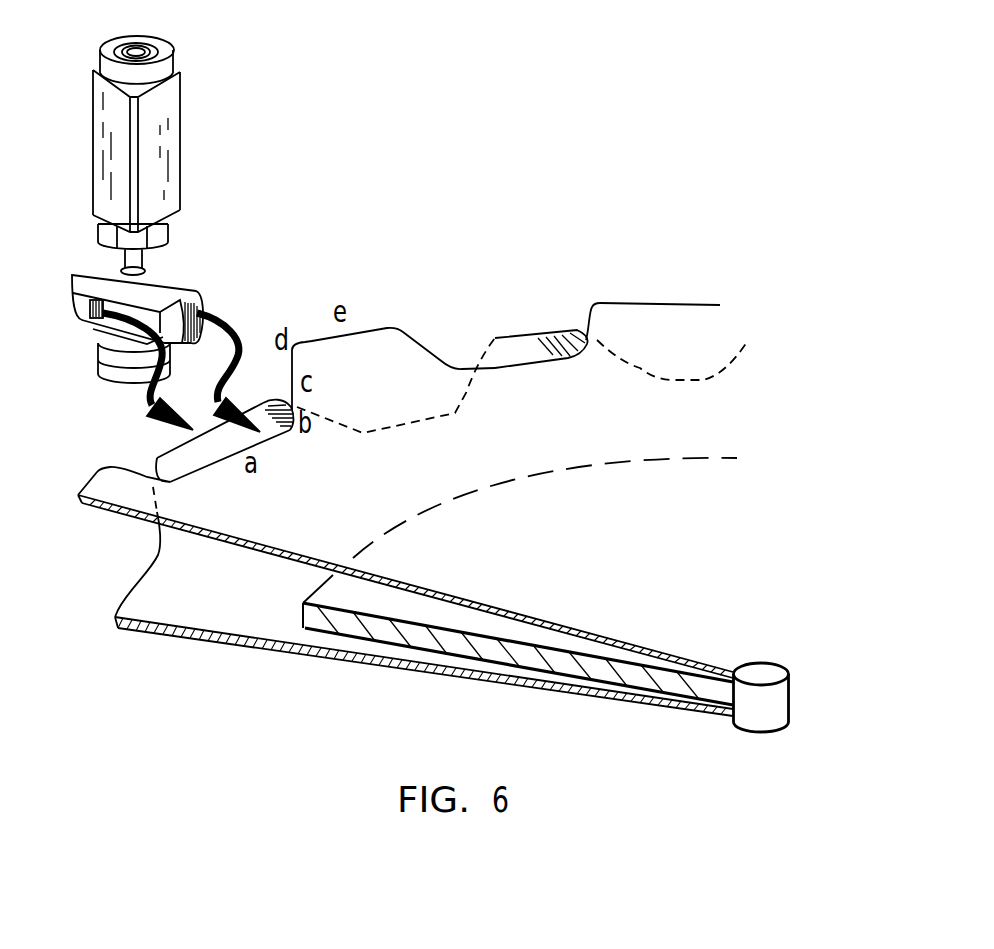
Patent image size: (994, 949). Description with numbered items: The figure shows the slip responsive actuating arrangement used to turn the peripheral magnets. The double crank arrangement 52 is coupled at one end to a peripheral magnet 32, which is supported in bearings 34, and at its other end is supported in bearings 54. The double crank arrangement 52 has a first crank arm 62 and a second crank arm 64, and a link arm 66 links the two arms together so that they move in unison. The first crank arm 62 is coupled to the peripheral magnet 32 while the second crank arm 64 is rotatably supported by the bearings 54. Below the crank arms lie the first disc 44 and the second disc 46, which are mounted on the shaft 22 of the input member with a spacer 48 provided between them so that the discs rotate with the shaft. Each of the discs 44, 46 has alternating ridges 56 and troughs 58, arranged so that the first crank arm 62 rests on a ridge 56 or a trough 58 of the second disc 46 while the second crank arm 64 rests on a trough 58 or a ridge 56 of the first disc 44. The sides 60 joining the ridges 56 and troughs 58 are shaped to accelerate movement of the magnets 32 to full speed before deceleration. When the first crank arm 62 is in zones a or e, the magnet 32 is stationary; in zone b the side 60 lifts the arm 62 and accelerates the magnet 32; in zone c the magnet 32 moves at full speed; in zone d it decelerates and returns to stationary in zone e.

The shaft 22 is at (755, 733).
The peripheral magnet 32 is at (184, 155).
The bearings 34 is at (181, 57).
The first disc 44 is at (248, 648).
The second disc 46 is at (110, 512).
The spacer 48 is at (438, 645).
The double crank arrangement 52 is at (262, 295).
The bearings 54 is at (120, 383).
The ridges 56 is at (538, 330).
The troughs 58 is at (512, 363).
The sides 60 is at (427, 347).
The first crank arm 62 is at (193, 287).
The second crank arm 64 is at (93, 333).
The link arm 66 is at (103, 283).